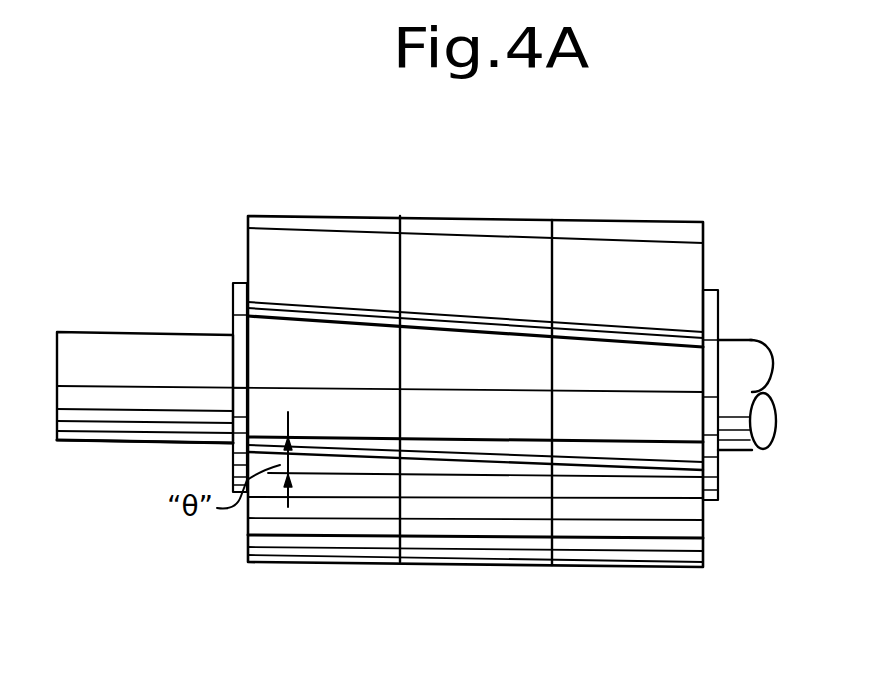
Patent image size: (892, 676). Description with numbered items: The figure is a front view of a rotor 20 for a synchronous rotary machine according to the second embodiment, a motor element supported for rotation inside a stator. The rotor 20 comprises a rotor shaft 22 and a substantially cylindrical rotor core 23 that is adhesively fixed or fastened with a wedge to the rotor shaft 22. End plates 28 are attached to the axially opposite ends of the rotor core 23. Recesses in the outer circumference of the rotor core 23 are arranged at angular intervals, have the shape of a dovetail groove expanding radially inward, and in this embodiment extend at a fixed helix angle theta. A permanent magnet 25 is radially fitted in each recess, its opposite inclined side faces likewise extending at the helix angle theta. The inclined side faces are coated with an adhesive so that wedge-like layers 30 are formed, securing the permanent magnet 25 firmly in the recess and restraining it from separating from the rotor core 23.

The rotor 20 is at (366, 189).
The rotor shaft 22 is at (140, 441).
The rotor core 23 is at (613, 337).
The permanent magnet 25 is at (343, 418).
The end plate 28 is at (238, 297).
The wedge-like layer 30 is at (484, 445).